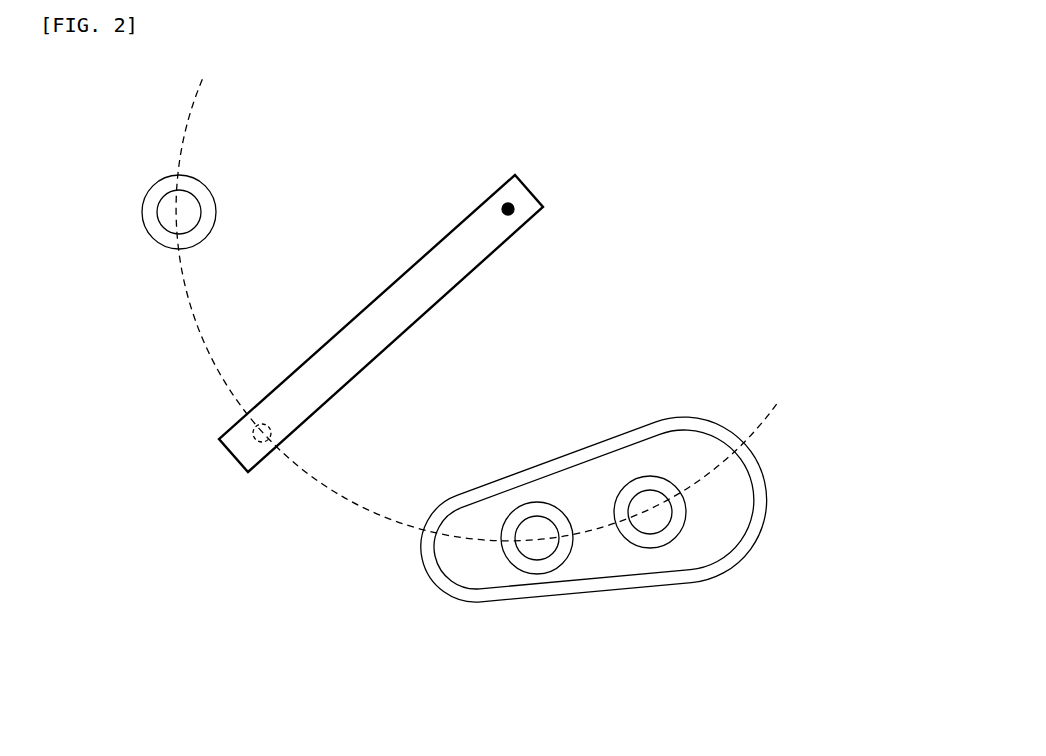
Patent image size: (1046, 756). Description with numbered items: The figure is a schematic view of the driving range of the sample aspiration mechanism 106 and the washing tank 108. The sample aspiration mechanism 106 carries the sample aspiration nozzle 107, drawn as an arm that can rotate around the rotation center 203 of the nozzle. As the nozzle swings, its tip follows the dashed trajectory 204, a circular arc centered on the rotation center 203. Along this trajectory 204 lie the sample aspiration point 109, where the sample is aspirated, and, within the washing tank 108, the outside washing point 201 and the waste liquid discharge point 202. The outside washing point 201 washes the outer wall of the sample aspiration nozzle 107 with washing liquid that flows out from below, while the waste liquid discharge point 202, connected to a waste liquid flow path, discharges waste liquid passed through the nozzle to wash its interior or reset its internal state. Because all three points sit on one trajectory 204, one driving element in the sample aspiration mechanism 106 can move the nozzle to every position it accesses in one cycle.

The sample aspiration mechanism 106 is at (533, 192).
The sample aspiration nozzle 107 is at (252, 428).
The washing tank 108 is at (702, 415).
The sample aspiration point 109 is at (158, 178).
The outside washing point 201 is at (552, 571).
The waste liquid discharge point 202 is at (672, 540).
The rotation center 203 is at (505, 202).
The trajectory 204 is at (335, 493).